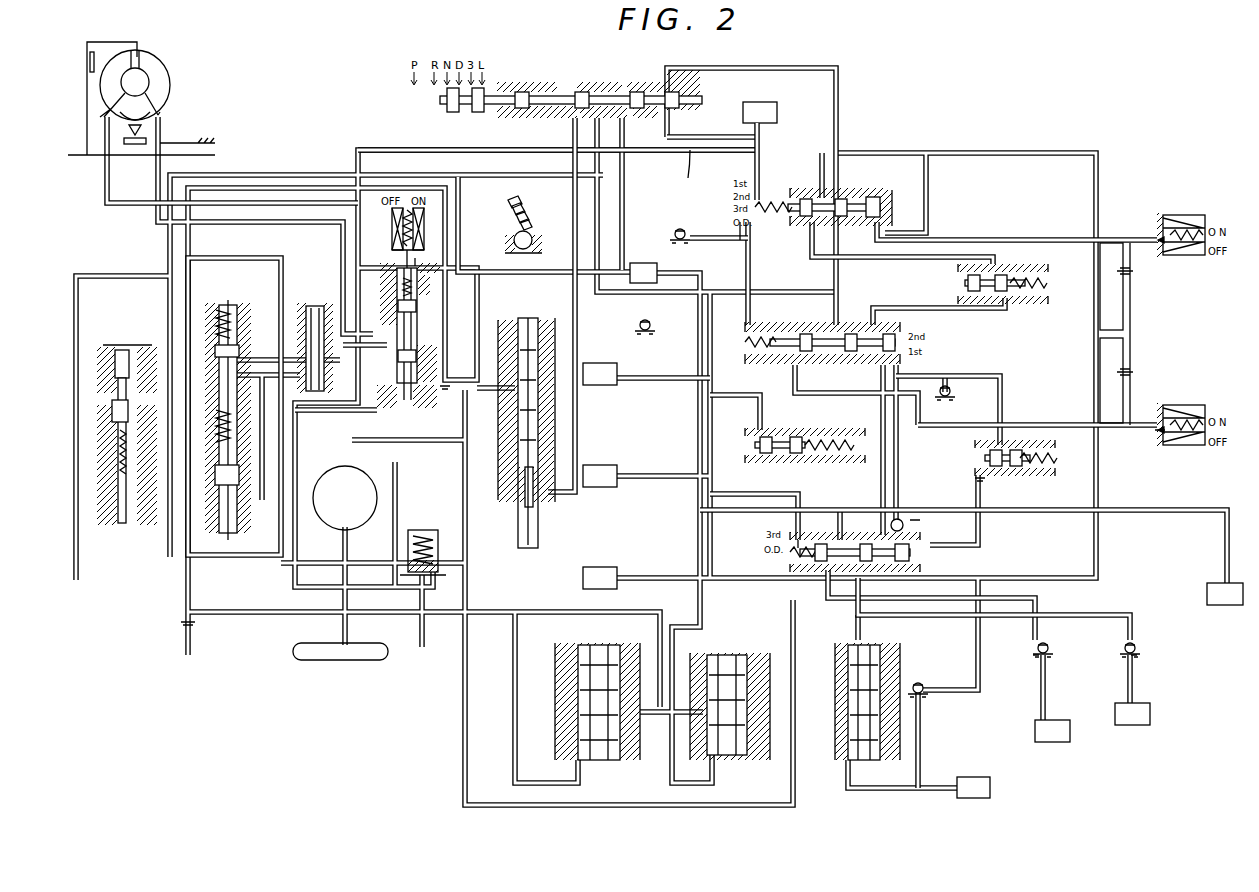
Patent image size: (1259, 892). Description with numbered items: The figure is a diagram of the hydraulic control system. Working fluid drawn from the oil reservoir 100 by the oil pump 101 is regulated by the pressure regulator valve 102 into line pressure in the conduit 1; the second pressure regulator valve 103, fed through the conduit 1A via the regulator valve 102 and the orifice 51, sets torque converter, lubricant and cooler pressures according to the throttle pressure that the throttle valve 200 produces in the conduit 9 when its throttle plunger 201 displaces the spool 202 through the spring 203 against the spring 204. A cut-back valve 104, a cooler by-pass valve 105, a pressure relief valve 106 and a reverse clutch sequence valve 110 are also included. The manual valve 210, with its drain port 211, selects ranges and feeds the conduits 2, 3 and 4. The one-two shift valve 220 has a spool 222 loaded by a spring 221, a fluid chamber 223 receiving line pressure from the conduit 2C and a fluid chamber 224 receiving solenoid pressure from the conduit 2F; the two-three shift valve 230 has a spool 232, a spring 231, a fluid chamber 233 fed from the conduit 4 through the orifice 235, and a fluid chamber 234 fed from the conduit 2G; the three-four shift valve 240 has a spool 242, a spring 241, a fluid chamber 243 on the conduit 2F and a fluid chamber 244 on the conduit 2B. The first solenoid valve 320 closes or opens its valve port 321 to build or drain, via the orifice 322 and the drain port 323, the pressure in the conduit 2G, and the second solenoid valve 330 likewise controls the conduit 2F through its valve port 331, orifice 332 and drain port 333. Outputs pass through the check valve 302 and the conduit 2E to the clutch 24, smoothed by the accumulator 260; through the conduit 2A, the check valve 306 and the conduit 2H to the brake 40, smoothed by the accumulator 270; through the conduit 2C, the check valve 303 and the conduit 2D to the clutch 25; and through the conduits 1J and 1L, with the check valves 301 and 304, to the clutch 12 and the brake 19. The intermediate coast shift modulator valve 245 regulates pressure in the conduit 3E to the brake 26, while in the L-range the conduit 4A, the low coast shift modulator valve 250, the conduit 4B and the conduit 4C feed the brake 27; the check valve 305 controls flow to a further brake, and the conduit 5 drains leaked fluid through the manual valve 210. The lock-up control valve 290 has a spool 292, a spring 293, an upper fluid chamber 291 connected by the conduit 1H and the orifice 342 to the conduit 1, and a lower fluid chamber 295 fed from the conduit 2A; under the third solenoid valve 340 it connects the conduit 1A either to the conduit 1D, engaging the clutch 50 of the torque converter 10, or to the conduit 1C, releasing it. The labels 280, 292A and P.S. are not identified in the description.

The conduit 1 is at (625, 208).
The conduit 1A is at (460, 218).
The conduit 1C is at (280, 212).
The conduit 1D is at (365, 340).
The conduit 1H is at (416, 262).
The conduit 1J is at (824, 593).
The conduit 1L is at (912, 618).
The conduit 2 is at (652, 153).
The conduit 2A is at (372, 384).
The conduit 2B is at (805, 492).
The conduit 2C is at (750, 292).
The conduit 2D is at (694, 245).
The conduit 2E is at (922, 732).
The conduit 2F is at (1112, 437).
The conduit 2G is at (1104, 240).
The conduit 2H is at (652, 379).
The conduit 3 is at (732, 68).
The conduit 3E is at (985, 448).
The conduit 4 is at (710, 134).
The conduit 4A is at (996, 262).
The conduit 4B is at (1008, 308).
The conduit 4C is at (1120, 511).
The conduit 5 is at (572, 138).
The conduit 9 is at (189, 284).
The torque converter 10 is at (168, 72).
The clutch 12 is at (1052, 731).
The brake 19 is at (1132, 714).
The clutch 24 is at (973, 787).
The clutch 25 is at (620, 375).
The brake 26 is at (600, 578).
The brake 27 is at (1225, 594).
The brake 40 is at (600, 374).
The clutch 50 is at (90, 55).
The orifice 51 is at (476, 392).
The oil reservoir 100 is at (353, 642).
The oil pump 101 is at (358, 484).
The pressure regulator valve 102 is at (526, 530).
The second pressure regulator valve 103 is at (124, 525).
The cut-back valve 104 is at (296, 312).
The cooler by-pass valve 105 is at (436, 548).
The pressure relief valve 106 is at (512, 194).
The reverse clutch sequence valve 110 is at (810, 430).
The throttle valve 200 is at (236, 520).
The throttle plunger 201 is at (240, 496).
The spool 202 is at (240, 350).
The spring 203 is at (240, 428).
The spring 204 is at (236, 328).
The manual valve 210 is at (602, 90).
The drain port 211 is at (565, 88).
The 1-2 shift valve 220 is at (910, 325).
The spring 221 is at (800, 350).
The spool 222 is at (848, 358).
The fluid chamber 223 is at (752, 350).
The fluid chamber 224 is at (908, 352).
The 2-3 shift valve 230 is at (868, 196).
The spring 231 is at (772, 200).
The spool 232 is at (844, 198).
The fluid chamber 233 is at (742, 242).
The fluid chamber 234 is at (878, 216).
The orifice 235 is at (690, 170).
The 3-4 shift valve 240 is at (903, 525).
The spring 241 is at (795, 540).
The spool 242 is at (866, 560).
The fluid chamber 243 is at (905, 558).
The fluid chamber 244 is at (820, 560).
The intermediate coast shift modulator valve 245 is at (1050, 452).
The low coast shift modulator valve 250 is at (1045, 278).
The accumulator 260 is at (880, 668).
The accumulator 270 is at (748, 688).
The accumulator 280 is at (620, 688).
The lock-up control valve 290 is at (382, 290).
The fluid chamber 291 is at (398, 285).
The spool 292 is at (418, 355).
The port 292A is at (387, 405).
The spring 293 is at (418, 305).
The fluid chamber 295 is at (430, 405).
The check valve 301 is at (1048, 645).
The check valve 302 is at (922, 684).
The check valve 303 is at (690, 230).
The check valve 304 is at (1137, 645).
The check valve 305 is at (950, 400).
The check valve 306 is at (645, 333).
The first solenoid valve 320 is at (1203, 222).
The valve port 321 is at (1156, 248).
The orifice 322 is at (1131, 276).
The drain port 323 is at (1162, 218).
The second solenoid valve 330 is at (1203, 412).
The valve port 331 is at (1120, 432).
The orifice 332 is at (1132, 376).
The drain port 333 is at (1160, 412).
The third solenoid valve 340 is at (430, 222).
The orifice 342 is at (508, 240).
The power steering P.S. is at (760, 151).